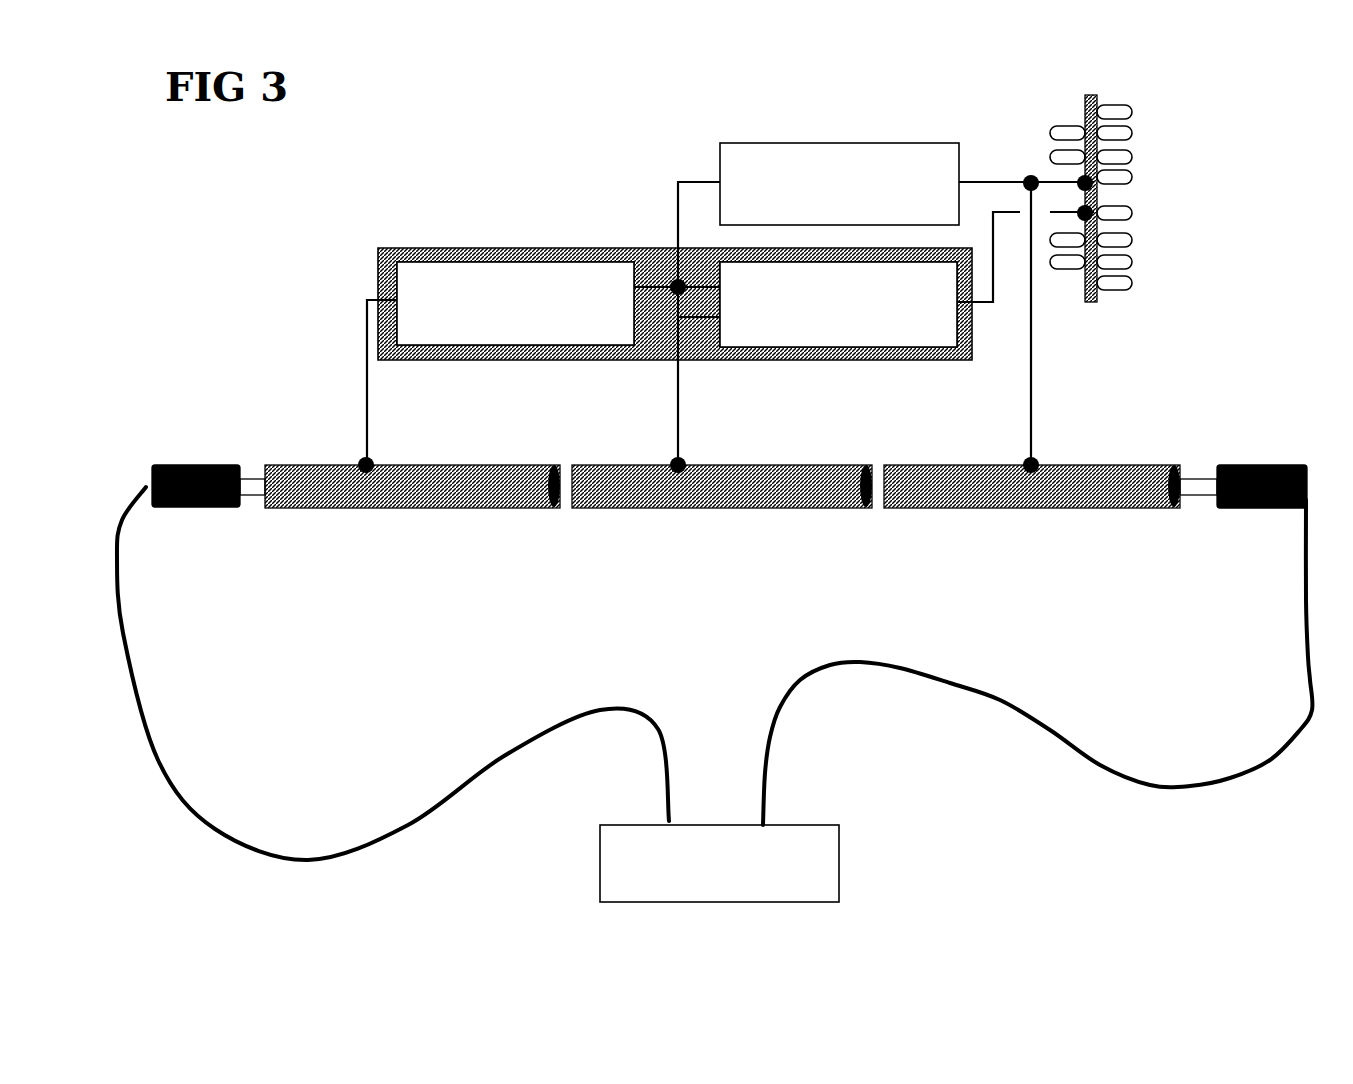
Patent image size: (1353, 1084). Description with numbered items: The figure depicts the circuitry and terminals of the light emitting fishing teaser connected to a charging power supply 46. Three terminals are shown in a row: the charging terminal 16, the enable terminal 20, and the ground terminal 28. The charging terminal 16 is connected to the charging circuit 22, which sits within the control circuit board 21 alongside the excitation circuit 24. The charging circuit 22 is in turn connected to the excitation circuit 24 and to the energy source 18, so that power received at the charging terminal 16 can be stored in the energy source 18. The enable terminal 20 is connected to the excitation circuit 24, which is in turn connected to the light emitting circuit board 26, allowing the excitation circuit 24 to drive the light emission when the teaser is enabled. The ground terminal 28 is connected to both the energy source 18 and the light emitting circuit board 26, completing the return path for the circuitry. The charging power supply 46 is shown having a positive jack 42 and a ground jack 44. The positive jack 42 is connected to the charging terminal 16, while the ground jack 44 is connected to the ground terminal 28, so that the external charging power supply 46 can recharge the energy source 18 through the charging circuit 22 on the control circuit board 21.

The charging terminal 16 is at (504, 508).
The energy source 18 is at (720, 148).
The enable terminal 20 is at (806, 508).
The control circuit board 21 is at (560, 248).
The charging circuit 22 is at (458, 258).
The excitation circuit 24 is at (830, 348).
The light emitting circuit board 26 is at (1085, 97).
The ground terminal 28 is at (1020, 508).
The positive jack 42 is at (215, 507).
The ground jack 44 is at (1247, 508).
The charging power supply 46 is at (600, 840).